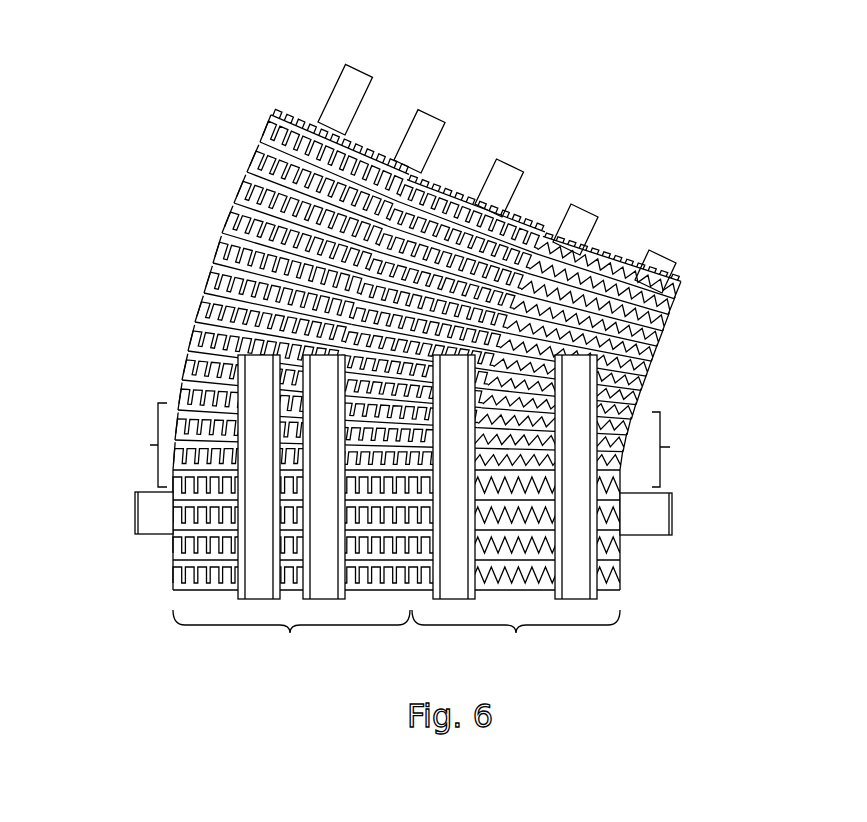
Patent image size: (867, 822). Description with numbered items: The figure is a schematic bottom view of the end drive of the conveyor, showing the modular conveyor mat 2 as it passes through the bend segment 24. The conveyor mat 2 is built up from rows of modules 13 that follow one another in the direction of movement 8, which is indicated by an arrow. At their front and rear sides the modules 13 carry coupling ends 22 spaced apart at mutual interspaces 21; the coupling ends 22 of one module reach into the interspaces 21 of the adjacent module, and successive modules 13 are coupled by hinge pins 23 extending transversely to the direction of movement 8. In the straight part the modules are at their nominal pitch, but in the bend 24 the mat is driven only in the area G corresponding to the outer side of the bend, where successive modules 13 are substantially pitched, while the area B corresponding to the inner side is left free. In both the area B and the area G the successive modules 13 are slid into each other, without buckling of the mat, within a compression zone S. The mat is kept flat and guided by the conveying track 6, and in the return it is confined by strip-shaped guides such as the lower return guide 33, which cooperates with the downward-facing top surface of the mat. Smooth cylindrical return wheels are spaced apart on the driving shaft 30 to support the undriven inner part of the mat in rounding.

The conveyor mat 2 is at (441, 344).
The conveying track 6 is at (495, 146).
The direction of movement 8 is at (108, 393).
The module 13 is at (517, 207).
The interspaces 21 is at (690, 240).
The coupling ends 22 is at (345, 147).
The hinge pins 23 is at (594, 250).
The bend segment 24 is at (667, 373).
The driving shaft 30 is at (656, 518).
The lower return guide 33 is at (323, 585).
The compression zone S is at (405, 445).
The area corresponding to the inner side of the bend B is at (291, 640).
The area corresponding to the outer side of the bend G is at (516, 640).